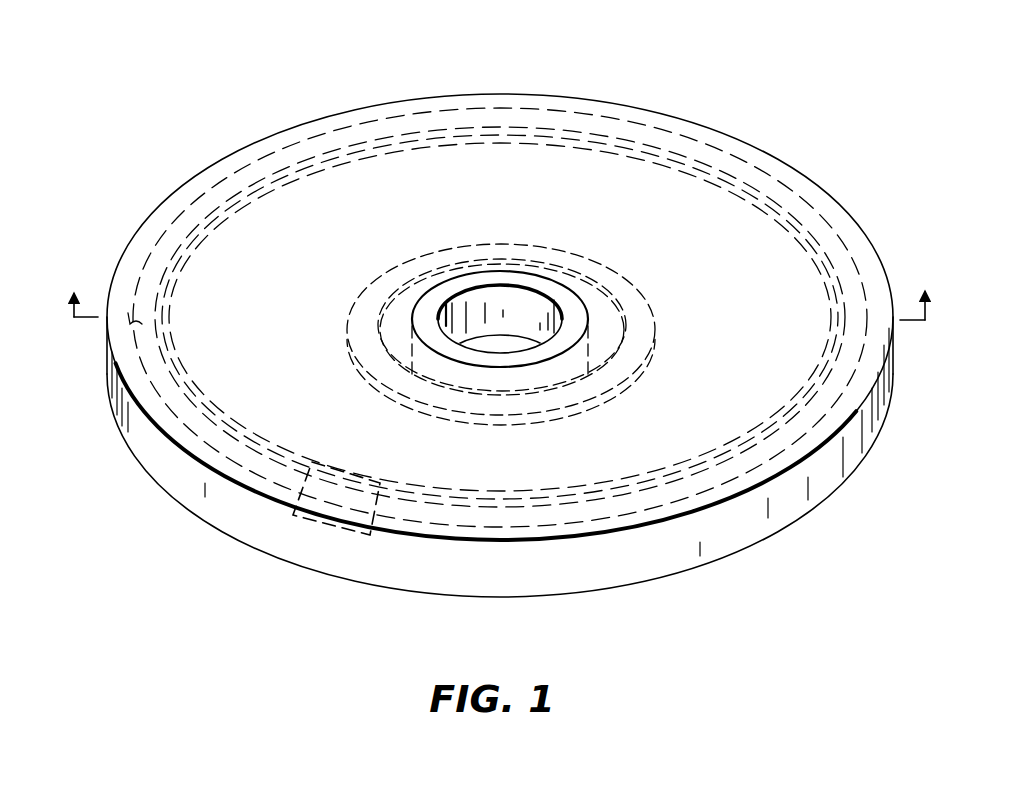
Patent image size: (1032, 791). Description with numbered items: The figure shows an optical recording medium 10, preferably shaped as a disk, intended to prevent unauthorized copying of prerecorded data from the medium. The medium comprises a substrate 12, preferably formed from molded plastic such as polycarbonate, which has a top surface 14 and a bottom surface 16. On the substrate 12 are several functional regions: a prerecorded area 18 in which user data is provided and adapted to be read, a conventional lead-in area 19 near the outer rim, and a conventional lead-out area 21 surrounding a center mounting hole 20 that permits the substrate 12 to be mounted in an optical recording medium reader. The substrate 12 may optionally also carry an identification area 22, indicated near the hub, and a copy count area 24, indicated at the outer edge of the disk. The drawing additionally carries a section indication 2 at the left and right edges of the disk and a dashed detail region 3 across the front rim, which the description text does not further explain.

The optical recording medium 10 is at (329, 66).
The substrate 12 is at (826, 478).
The top surface 14 is at (640, 114).
The bottom surface 16 is at (674, 575).
The prerecorded area 18 is at (740, 382).
The lead-in area 19 is at (723, 142).
The center mounting hole 20 is at (528, 298).
The lead-out area 21 is at (573, 266).
The identification area 22 is at (383, 281).
The copy count area 24 is at (128, 324).
The detail region (FIG. 3) 3 is at (322, 528).
The section line 2- 2 is at (500, 321).